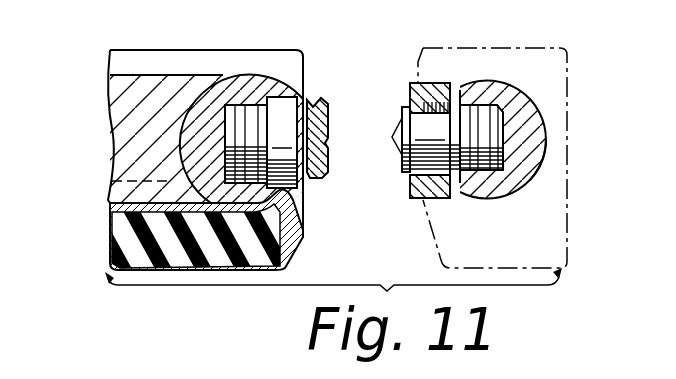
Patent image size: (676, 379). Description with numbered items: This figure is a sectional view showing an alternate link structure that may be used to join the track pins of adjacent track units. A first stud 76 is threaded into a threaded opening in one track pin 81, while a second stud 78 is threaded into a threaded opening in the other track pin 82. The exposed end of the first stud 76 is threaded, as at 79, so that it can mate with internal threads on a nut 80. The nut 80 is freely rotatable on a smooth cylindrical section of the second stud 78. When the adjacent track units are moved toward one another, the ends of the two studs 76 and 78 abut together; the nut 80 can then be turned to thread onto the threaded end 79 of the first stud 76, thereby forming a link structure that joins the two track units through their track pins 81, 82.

The first stud 76 is at (233, 102).
The second stud 78 is at (492, 118).
The threads 79 is at (321, 100).
The nut 80 is at (441, 86).
The track pin 81 is at (205, 78).
The track pin 82 is at (520, 143).